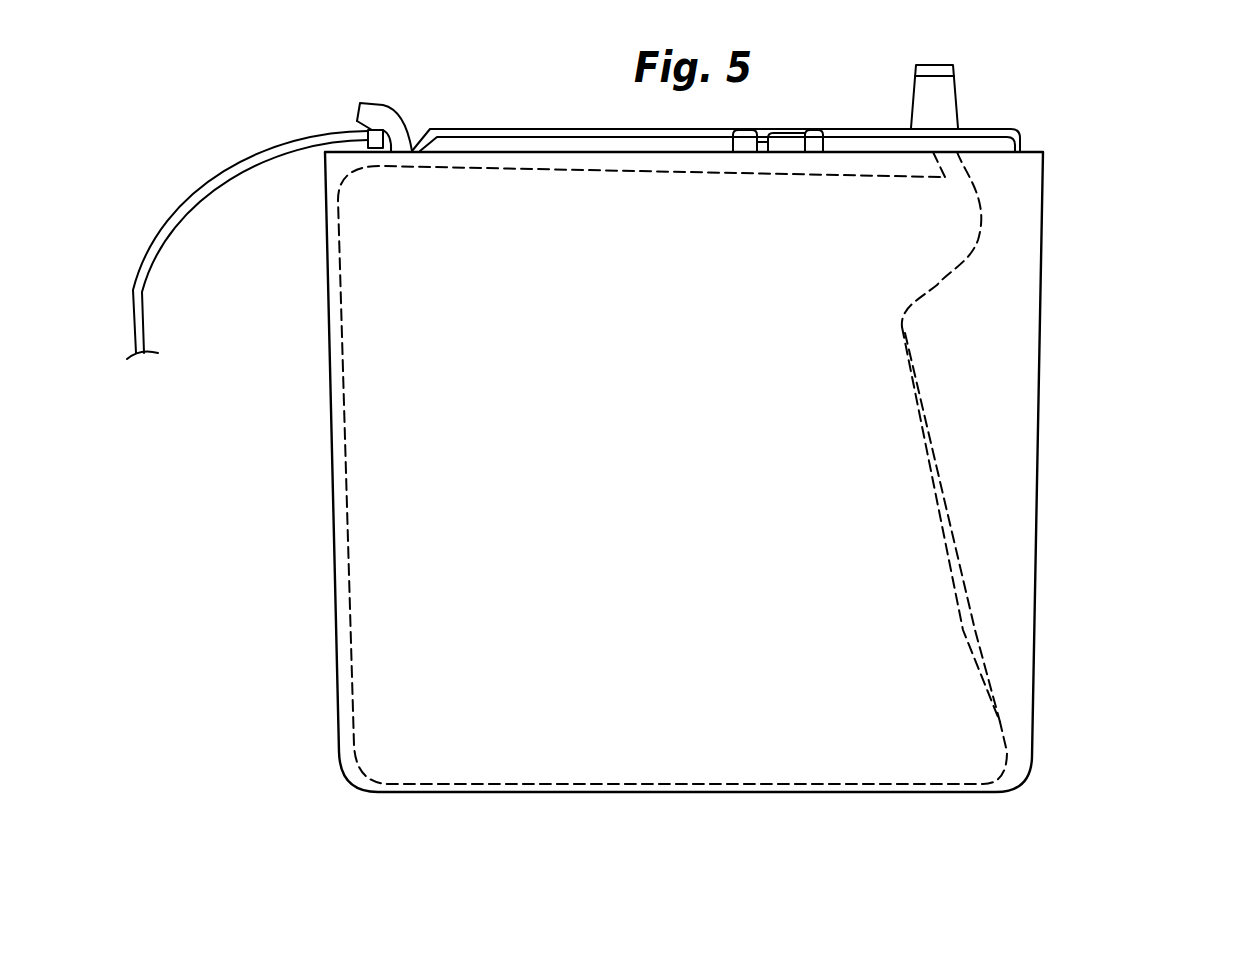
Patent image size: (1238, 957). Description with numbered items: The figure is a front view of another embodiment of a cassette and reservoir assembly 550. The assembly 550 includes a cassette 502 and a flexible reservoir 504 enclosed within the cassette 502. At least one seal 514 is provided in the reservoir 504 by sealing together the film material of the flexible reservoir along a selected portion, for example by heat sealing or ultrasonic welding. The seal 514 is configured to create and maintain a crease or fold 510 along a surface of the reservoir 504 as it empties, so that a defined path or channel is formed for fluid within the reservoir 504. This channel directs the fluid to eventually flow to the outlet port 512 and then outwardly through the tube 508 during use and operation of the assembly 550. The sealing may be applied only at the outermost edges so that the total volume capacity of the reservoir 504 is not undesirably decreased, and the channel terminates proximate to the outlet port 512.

The cassette 502 is at (1043, 230).
The reservoir 504 is at (945, 278).
The tube 508 is at (253, 147).
The crease or fold 510 is at (947, 522).
The outlet port 512 is at (945, 167).
The seal 514 is at (952, 527).
The cassette and reservoir assembly 550 is at (688, 852).